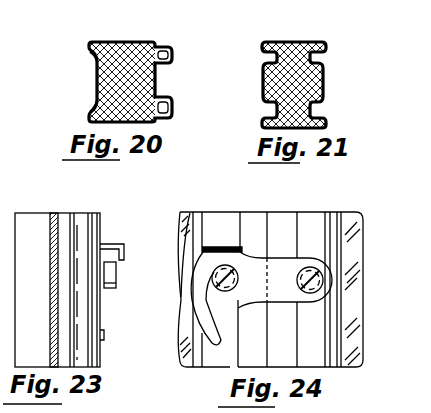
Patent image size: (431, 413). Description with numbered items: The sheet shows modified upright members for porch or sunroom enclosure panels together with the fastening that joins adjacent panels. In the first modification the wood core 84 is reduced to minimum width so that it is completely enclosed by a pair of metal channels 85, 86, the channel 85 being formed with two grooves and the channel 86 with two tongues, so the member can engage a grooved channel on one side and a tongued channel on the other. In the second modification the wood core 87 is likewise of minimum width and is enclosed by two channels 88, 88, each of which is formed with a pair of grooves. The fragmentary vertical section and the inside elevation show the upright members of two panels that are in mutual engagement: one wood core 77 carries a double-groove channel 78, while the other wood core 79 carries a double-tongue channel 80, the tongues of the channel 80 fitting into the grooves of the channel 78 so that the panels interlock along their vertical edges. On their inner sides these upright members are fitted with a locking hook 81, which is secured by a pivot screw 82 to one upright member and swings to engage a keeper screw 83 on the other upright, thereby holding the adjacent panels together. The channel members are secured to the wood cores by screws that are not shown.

In FIG. 24, the wood core 77 is at (218, 212).
In FIG. 24, the double-groove channel 78 is at (250, 212).
In FIG. 23, the wood core 79 is at (65, 222).
In FIG. 24, the wood core 79 is at (317, 220).
In FIG. 24, the double-tongue channel 80 is at (281, 217).
In FIG. 23, the locking hook 81 is at (112, 244).
In FIG. 24, the locking hook 81 is at (280, 262).
In FIG. 23, the pivot screw 82 is at (110, 281).
In FIG. 24, the pivot screw 82 is at (238, 288).
In FIG. 24, the keeper screw 83 is at (308, 300).
In FIG. 20, the wood core 84 is at (132, 41).
In FIG. 20, the channel 85 is at (95, 85).
In FIG. 20, the channel 86 is at (153, 79).
In FIG. 21, the wood core 87 is at (297, 41).
In FIG. 21, the channel 88 is at (265, 88).